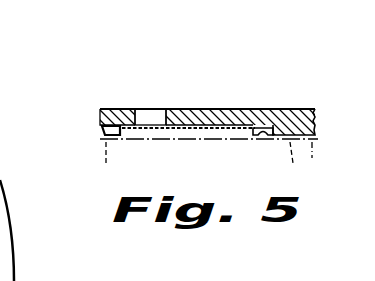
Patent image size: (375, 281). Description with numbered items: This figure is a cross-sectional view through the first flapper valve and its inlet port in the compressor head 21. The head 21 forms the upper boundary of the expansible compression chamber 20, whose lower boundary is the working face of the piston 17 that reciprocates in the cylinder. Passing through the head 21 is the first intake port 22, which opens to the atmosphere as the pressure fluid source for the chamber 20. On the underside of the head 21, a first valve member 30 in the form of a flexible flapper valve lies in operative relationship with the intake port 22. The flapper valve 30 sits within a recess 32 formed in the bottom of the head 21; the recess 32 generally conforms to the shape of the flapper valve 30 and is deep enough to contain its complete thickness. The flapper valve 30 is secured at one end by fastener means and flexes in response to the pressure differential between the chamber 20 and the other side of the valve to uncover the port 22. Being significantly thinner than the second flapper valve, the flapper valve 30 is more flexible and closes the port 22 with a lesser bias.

The piston 17 is at (293, 163).
The expansible compression chamber 20 is at (317, 138).
The compressor head 21 is at (278, 115).
The first intake port 22 is at (152, 109).
The first valve member 30 is at (186, 130).
The recess 32 is at (102, 125).